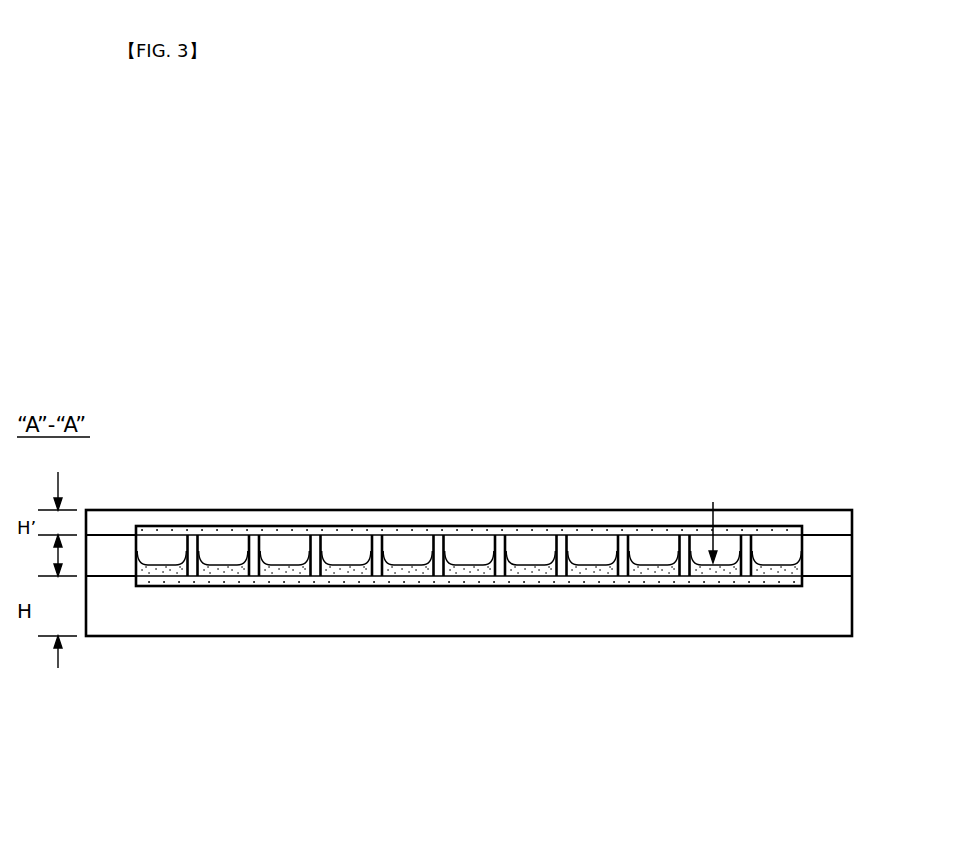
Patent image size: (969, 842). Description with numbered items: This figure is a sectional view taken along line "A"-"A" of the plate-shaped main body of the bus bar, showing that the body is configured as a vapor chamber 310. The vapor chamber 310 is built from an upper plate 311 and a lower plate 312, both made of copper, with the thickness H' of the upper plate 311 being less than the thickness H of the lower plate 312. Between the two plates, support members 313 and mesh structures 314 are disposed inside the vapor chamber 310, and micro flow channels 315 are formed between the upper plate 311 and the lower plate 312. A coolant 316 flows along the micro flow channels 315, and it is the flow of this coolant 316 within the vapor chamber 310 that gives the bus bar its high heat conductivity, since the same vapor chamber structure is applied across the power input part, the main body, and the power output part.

The vapor chamber 310 is at (863, 445).
The upper plate 311 is at (437, 502).
The lower plate 312 is at (438, 643).
The support member 313 is at (747, 547).
The mesh structure 314 is at (606, 528).
The micro flow channel 315 is at (782, 557).
The coolant 316 is at (713, 502).